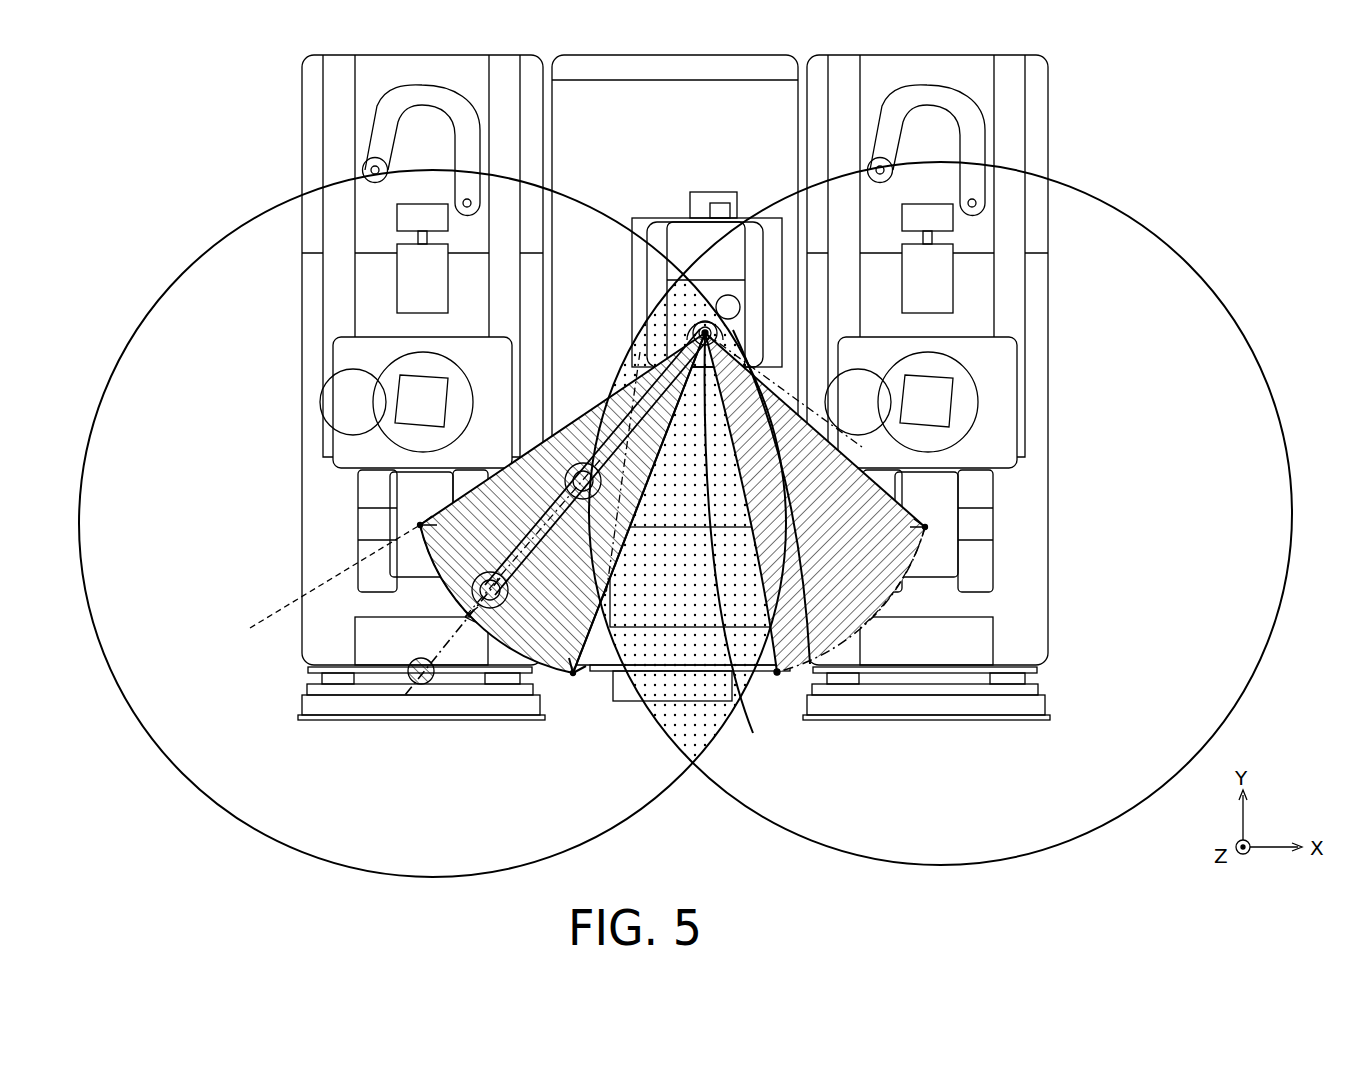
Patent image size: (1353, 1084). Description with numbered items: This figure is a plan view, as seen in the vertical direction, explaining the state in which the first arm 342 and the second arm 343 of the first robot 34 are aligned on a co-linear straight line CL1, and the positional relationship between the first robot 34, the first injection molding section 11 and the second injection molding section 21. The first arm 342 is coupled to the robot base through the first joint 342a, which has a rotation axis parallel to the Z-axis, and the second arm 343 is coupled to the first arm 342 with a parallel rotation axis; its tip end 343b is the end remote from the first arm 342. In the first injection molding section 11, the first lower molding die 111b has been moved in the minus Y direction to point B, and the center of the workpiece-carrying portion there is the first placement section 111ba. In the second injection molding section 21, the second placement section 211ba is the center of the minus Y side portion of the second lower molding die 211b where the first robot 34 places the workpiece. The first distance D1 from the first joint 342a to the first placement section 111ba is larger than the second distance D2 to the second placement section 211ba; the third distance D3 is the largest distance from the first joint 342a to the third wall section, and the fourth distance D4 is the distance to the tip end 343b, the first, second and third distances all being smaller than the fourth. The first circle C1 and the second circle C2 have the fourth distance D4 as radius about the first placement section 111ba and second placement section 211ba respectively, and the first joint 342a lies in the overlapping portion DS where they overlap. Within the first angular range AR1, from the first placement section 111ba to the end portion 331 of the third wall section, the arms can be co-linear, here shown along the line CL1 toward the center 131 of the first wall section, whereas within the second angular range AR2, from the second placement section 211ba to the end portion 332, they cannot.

The first injection molding section 11 is at (294, 413).
The second injection molding section 21 is at (1058, 413).
The first robot 34 is at (675, 205).
The first arm 342 is at (735, 712).
The first joint 342a is at (705, 333).
The second arm 343 is at (568, 600).
The tip end of the second arm 343b is at (486, 608).
The end portion of the third wall section in the −X direction 331 is at (572, 690).
The end portion of the third wall section in the +X direction 332 is at (778, 682).
The center of the first wall section 131 is at (422, 686).
The first lower molding die 111b is at (416, 525).
The first placement section 111ba is at (405, 543).
The second lower molding die 211b is at (937, 557).
The second placement section 211ba is at (930, 527).
The first circle C1 is at (177, 276).
The second circle C2 is at (1135, 231).
The first angular range AR1 is at (605, 395).
The second angular range AR2 is at (877, 603).
The overlapping portion DS is at (672, 745).
The first distance D1 is at (538, 447).
The second distance D2 is at (850, 465).
The third distance D3 is at (605, 597).
The fourth distance D4 is at (548, 525).
The point B is at (324, 585).
The co-linear straight line CL1 is at (436, 648).